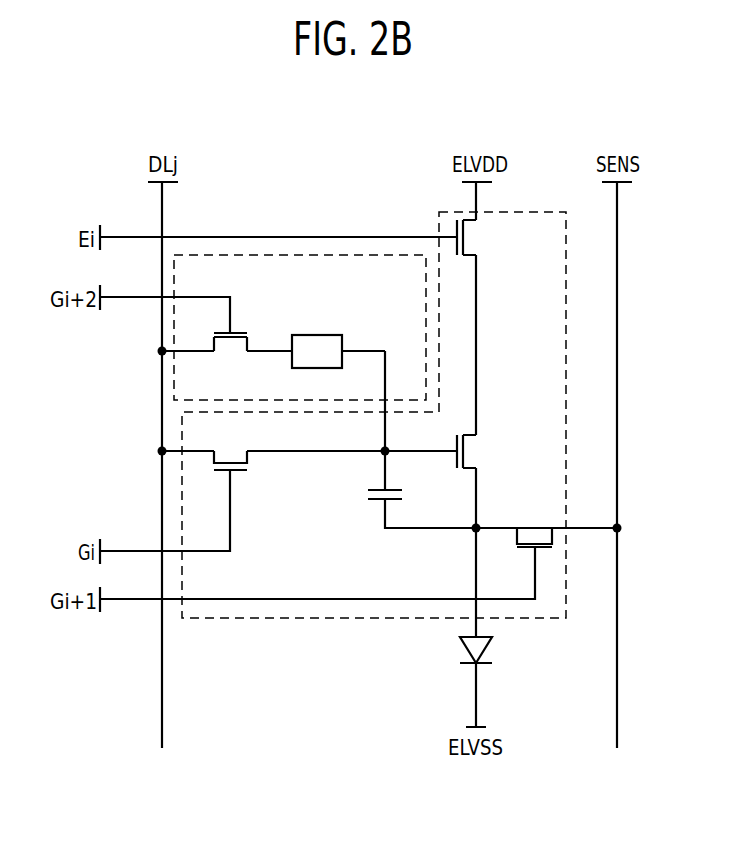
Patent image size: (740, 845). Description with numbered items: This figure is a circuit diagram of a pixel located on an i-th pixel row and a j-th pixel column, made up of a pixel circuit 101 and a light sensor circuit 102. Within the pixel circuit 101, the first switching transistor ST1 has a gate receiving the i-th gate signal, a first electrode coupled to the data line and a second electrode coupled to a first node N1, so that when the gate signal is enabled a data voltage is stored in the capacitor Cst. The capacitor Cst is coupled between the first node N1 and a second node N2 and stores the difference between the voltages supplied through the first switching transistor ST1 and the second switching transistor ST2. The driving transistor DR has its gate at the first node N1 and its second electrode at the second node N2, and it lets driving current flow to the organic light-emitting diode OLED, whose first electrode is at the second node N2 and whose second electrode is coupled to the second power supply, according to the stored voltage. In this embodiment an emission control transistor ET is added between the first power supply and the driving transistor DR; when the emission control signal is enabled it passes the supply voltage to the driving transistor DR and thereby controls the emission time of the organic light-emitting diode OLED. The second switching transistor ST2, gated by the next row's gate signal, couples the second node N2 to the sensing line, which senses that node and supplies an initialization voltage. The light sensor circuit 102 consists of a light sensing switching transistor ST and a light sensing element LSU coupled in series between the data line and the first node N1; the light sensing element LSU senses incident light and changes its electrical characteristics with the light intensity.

The pixel circuit 101 is at (535, 212).
The light sensor circuit 102 is at (353, 255).
The emission control transistor ET is at (478, 237).
The driving transistor DR is at (480, 451).
The light sensing switching transistor ST is at (230, 356).
The first switching transistor ST1 is at (231, 446).
The second switching transistor ST2 is at (535, 523).
The light sensing element LSU is at (316, 335).
The capacitor Cst is at (402, 497).
The organic light-emitting diode OLED is at (501, 652).
The first node N1 is at (397, 439).
The second node N2 is at (464, 545).